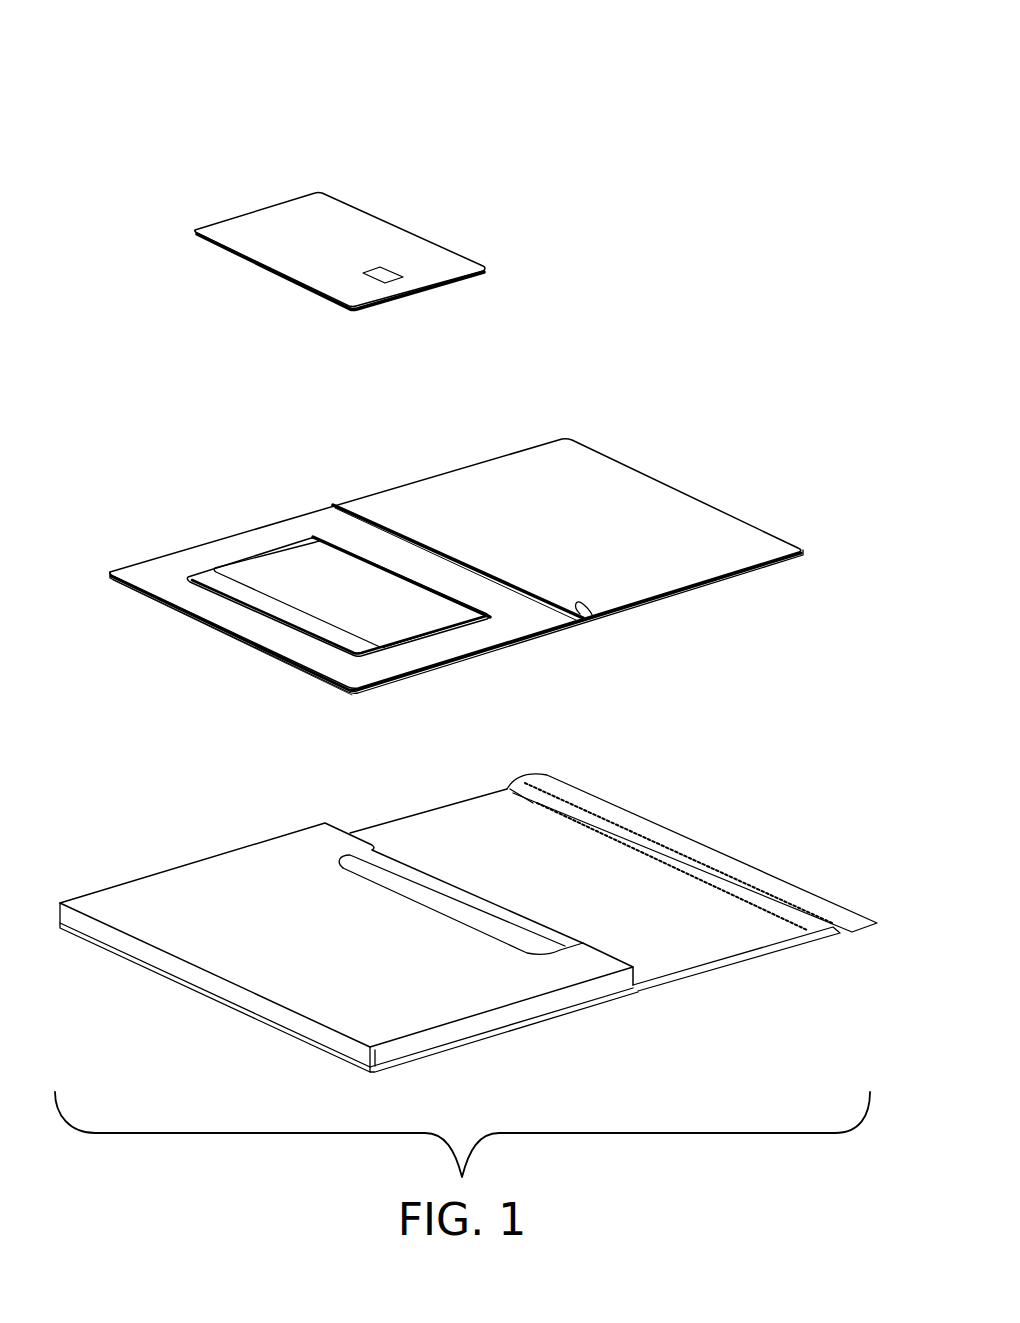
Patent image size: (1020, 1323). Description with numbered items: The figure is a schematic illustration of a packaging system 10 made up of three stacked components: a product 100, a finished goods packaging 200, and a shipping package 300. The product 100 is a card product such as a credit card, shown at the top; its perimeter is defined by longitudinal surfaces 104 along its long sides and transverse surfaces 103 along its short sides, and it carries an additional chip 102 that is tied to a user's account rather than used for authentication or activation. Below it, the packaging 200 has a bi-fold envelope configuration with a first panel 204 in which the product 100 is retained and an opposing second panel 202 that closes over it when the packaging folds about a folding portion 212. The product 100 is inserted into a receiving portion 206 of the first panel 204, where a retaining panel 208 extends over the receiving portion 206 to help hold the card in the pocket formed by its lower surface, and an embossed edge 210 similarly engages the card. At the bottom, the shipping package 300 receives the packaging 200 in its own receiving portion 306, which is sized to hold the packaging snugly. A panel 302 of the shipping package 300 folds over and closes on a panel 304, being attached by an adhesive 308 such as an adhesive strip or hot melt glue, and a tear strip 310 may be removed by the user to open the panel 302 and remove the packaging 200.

The packaging system 10 is at (350, 76).
The product 100 is at (448, 162).
The additional chip 102 is at (388, 277).
The transverse surfaces 103 is at (243, 208).
The longitudinal surfaces 104 is at (455, 248).
The finished goods packaging 200 is at (750, 465).
The second panel 202 is at (518, 472).
The first panel 204 is at (212, 553).
The receiving portion 206 is at (328, 565).
The retaining panel 208 is at (250, 597).
The embossed edge 210 is at (280, 545).
The folding portion 212 is at (593, 616).
The shipping package 300 is at (808, 806).
The panel 302 is at (410, 836).
The panel 304 is at (203, 872).
The receiving portion 306 is at (463, 923).
The adhesive 308 is at (585, 800).
The tear strip 310 is at (650, 850).